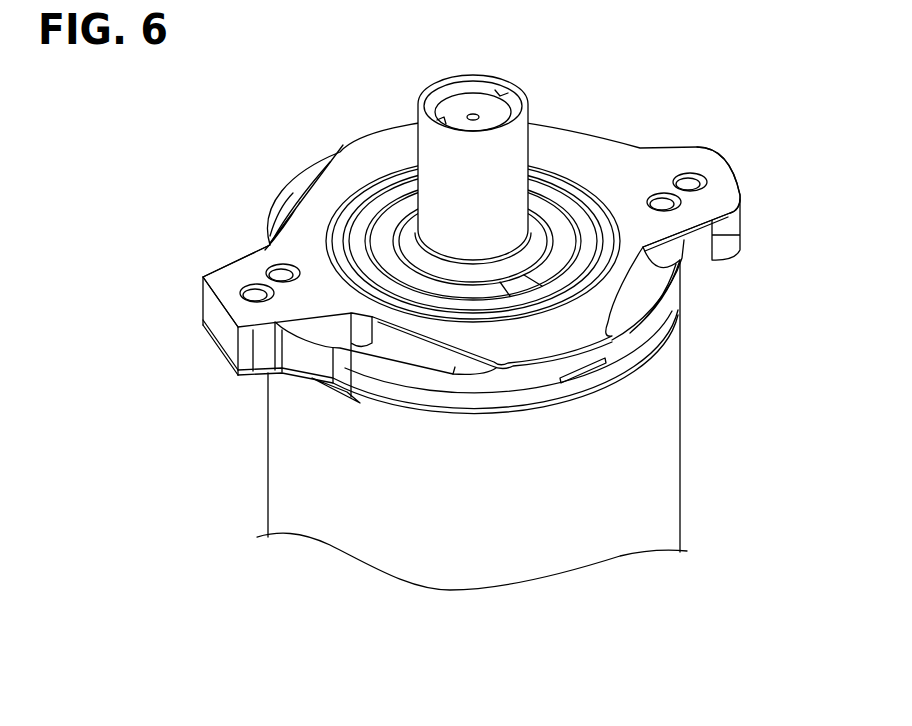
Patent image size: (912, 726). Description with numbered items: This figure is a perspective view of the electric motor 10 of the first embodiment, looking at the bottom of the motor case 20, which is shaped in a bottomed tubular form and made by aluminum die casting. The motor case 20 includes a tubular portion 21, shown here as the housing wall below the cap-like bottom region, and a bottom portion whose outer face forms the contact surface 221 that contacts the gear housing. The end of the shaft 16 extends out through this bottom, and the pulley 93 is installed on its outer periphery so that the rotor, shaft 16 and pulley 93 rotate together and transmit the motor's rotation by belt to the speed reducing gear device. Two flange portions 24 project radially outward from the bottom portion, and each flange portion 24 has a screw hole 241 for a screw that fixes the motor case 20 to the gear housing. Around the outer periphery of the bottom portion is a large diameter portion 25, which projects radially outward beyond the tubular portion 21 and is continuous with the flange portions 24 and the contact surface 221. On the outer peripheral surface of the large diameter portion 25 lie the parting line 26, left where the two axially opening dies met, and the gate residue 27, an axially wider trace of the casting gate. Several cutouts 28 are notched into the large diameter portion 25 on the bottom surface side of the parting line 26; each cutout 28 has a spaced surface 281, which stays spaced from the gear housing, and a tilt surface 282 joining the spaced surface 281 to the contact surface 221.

The electric motor 10 is at (462, 356).
The shaft 16 is at (459, 110).
The motor case 20 is at (466, 426).
The tubular portion 21 is at (657, 422).
The contact surface 221 is at (372, 150).
The flange portion 24 is at (456, 242).
The screw hole 241 is at (685, 183).
The large diameter portion 25 is at (422, 403).
The parting line 26 is at (517, 393).
The gate residue 27 is at (582, 377).
The cutout 28 is at (272, 235).
The spaced surface 281 is at (293, 212).
The tilt surface 282 is at (318, 187).
The pulley 93 is at (514, 137).